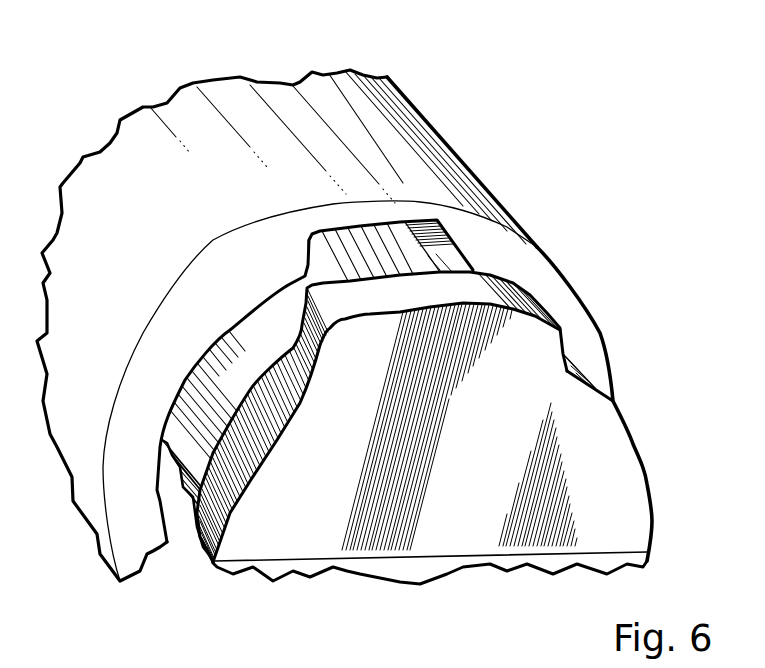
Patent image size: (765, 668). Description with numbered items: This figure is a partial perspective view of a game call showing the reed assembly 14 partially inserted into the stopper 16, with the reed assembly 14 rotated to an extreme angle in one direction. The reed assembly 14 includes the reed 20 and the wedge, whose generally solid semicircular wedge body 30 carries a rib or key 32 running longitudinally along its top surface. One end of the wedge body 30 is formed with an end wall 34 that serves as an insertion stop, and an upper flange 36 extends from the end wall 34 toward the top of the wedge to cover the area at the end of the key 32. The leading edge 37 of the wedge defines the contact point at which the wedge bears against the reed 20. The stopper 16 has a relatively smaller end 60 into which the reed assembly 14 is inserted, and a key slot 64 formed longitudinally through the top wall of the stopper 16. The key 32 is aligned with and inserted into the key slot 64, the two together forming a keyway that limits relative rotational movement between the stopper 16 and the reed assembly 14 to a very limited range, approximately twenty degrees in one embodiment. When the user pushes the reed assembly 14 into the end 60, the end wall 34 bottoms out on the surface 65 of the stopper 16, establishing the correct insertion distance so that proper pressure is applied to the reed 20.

The reed assembly section 14 is at (667, 564).
The stopper 16 is at (388, 76).
The reed 20 is at (360, 574).
The wedge body 30 is at (275, 345).
The key 32 is at (447, 257).
The end wall 34 is at (484, 501).
The flange 36 is at (395, 357).
The leading edge 37 is at (583, 554).
The small end 60 is at (539, 248).
The key slot 64 is at (312, 254).
The surface 65 is at (143, 381).